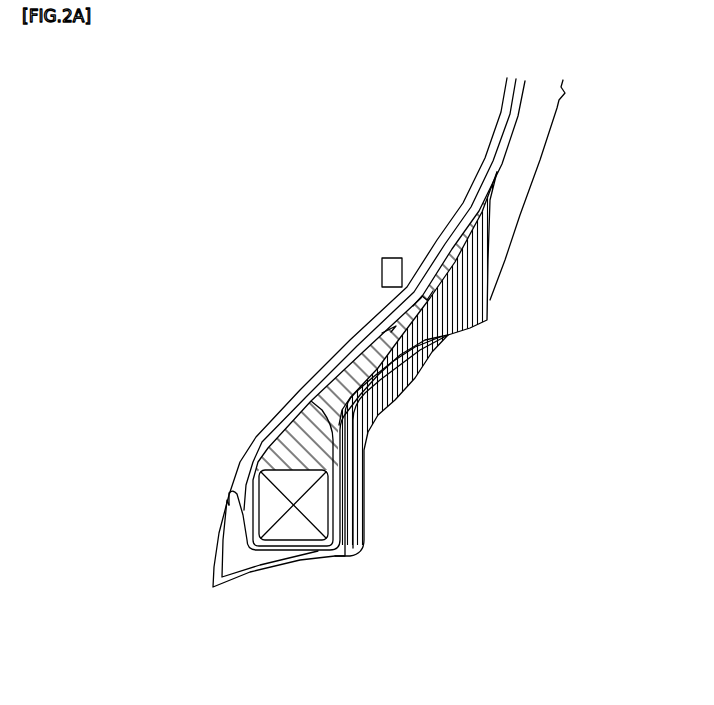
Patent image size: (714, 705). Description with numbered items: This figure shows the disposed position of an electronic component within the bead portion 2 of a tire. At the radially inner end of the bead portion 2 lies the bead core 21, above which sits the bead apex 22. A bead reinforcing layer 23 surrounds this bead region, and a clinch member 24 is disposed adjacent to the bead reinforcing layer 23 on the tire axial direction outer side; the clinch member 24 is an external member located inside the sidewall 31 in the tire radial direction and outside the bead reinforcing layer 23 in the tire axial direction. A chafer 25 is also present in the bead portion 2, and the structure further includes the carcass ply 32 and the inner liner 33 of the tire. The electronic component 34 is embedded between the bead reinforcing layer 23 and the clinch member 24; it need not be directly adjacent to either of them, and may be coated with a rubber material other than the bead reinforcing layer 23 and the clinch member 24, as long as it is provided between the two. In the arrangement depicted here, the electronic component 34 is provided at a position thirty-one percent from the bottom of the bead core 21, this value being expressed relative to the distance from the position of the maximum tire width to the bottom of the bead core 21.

The bead portion 2 is at (281, 311).
The bead core 21 is at (293, 527).
The bead apex 22 is at (303, 448).
The bead reinforcing layer 23 is at (456, 264).
The clinch member 24 is at (391, 378).
The chafer 25 is at (247, 578).
The sidewall 31 is at (535, 132).
The carcass ply 32 is at (462, 228).
The inner liner 33 is at (484, 160).
The electronic component 34 is at (426, 297).